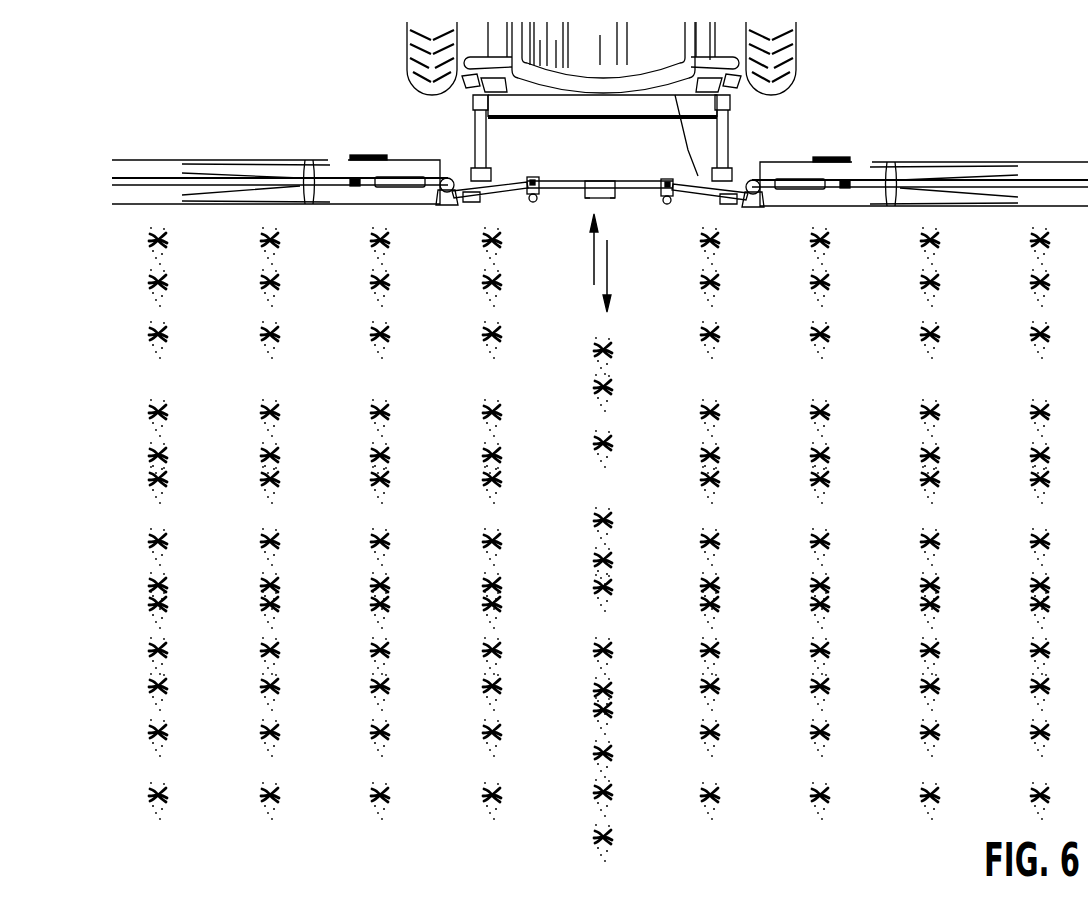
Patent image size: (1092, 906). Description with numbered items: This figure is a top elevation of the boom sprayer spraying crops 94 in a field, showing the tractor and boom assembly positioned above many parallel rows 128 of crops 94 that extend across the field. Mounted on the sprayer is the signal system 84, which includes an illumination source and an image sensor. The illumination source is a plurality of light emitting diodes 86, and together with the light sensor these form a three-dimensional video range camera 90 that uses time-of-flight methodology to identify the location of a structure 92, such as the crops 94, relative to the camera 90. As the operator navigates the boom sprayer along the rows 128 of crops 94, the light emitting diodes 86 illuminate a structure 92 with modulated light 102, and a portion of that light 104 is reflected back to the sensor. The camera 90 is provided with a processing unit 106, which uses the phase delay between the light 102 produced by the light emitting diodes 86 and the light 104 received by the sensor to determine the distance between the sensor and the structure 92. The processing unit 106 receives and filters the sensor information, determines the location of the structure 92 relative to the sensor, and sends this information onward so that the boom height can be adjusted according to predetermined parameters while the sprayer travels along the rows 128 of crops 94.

The signal system 84 is at (602, 180).
The light emitting diodes 86 is at (602, 198).
The 3D video range camera 90 is at (588, 198).
The structure 92 is at (596, 396).
The crops 94 is at (152, 281).
The light produced by the LEDs 102 is at (608, 272).
The light received by the sensor 104 is at (590, 262).
The processing unit 106 is at (588, 180).
The rows of crops 128 is at (248, 600).